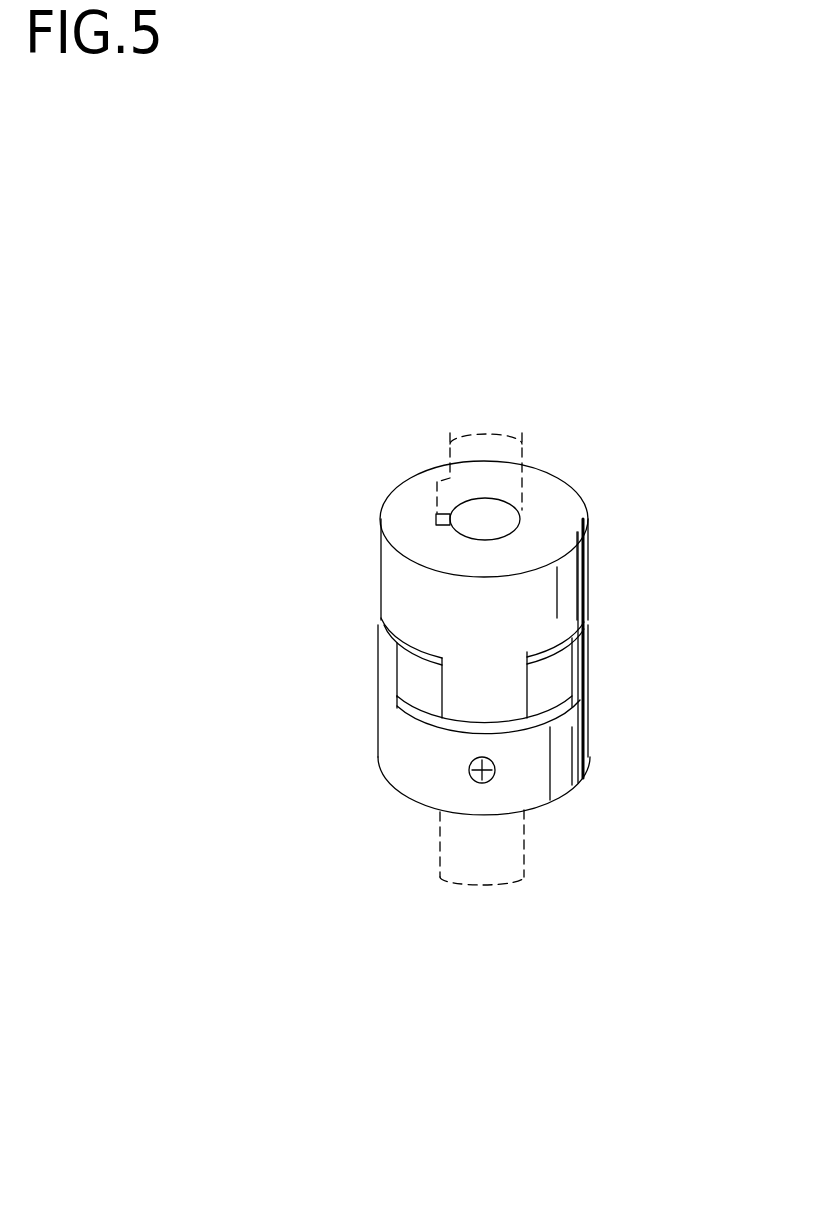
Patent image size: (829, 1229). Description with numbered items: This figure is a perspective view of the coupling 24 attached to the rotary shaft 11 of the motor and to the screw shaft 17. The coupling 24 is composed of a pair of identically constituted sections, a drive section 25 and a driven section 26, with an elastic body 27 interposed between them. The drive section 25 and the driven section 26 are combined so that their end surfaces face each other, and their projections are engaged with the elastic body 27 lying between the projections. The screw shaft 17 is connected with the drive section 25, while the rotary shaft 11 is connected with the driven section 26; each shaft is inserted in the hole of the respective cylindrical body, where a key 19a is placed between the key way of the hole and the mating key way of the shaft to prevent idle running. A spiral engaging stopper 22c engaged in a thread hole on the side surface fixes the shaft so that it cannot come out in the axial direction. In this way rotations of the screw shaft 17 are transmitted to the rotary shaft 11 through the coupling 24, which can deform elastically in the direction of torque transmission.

The rotary shaft 11 is at (523, 445).
The screw shaft 17 is at (525, 832).
The key 19a is at (435, 505).
The spiral engaging stopper 22c is at (590, 579).
The coupling 24 is at (592, 668).
The drive section 25 is at (586, 757).
The driven section 26 is at (588, 508).
The elastic body 27 is at (407, 665).